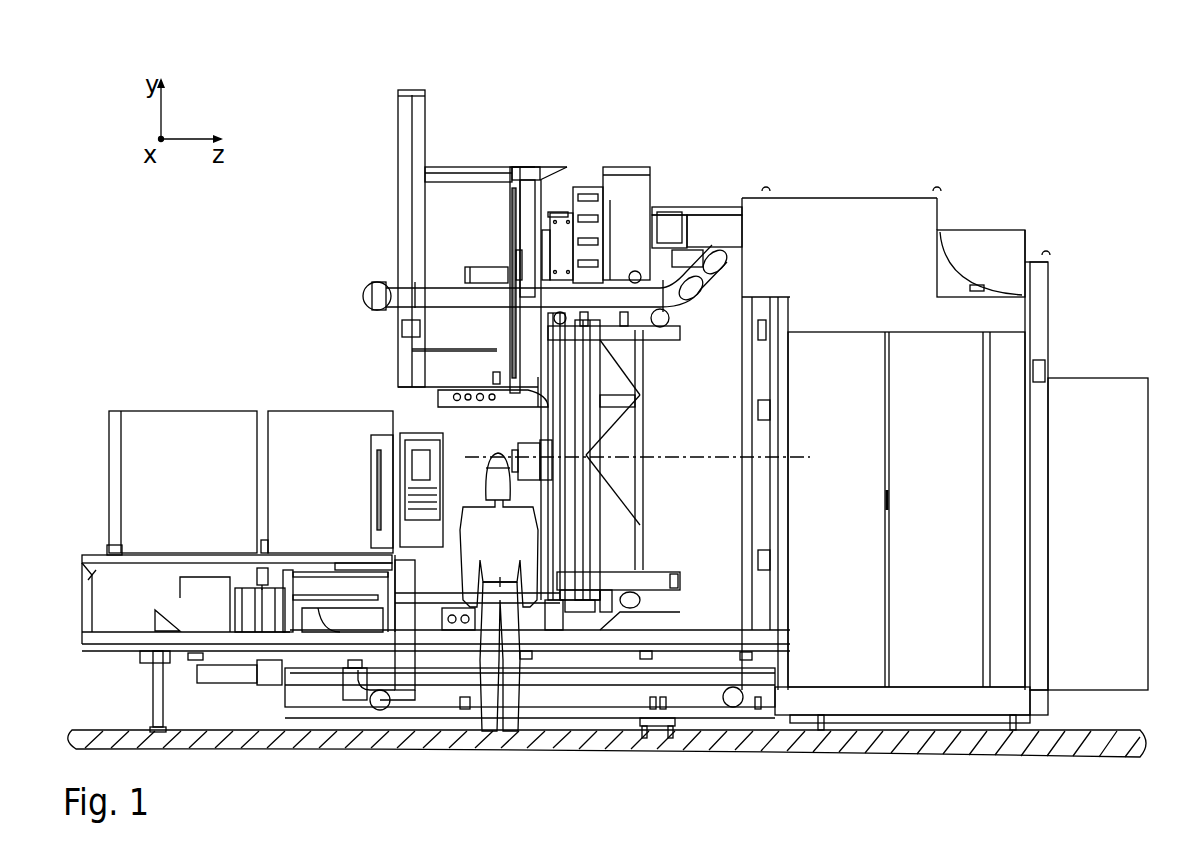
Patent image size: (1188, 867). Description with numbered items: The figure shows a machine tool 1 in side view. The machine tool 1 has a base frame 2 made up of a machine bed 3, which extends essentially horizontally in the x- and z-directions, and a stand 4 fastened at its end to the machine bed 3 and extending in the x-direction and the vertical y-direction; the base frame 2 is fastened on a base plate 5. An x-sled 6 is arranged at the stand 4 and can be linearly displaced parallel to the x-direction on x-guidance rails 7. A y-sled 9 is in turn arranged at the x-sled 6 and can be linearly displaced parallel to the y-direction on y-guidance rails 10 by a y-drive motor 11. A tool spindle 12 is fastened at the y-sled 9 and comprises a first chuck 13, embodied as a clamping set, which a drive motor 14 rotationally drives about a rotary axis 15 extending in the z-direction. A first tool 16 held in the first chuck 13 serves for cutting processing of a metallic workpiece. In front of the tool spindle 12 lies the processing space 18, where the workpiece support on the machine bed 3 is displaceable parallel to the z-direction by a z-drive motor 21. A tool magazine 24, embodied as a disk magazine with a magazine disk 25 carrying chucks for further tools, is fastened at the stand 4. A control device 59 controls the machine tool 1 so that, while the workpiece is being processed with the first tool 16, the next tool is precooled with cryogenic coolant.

The machine tool 1 is at (667, 105).
The base frame 2 is at (311, 736).
The machine bed 3 is at (418, 702).
The stand 4 is at (643, 567).
The base plate 5 is at (862, 750).
The x-sled 6 is at (672, 203).
The x-guidance rails 7 is at (650, 350).
The y-sled 9 is at (563, 430).
The y-guidance rails 10 is at (593, 547).
The y-drive motor 11 is at (562, 237).
The tool spindle 12 is at (538, 316).
The first chuck 13 is at (528, 447).
The drive motor 14 is at (522, 433).
The rotary axis 15 is at (802, 460).
The first tool 16 is at (517, 462).
The processing space 18 is at (307, 498).
The z-drive motor 21 is at (225, 674).
The tool magazine 24 is at (499, 224).
The magazine disk 25 is at (512, 260).
The control device 59 is at (422, 520).